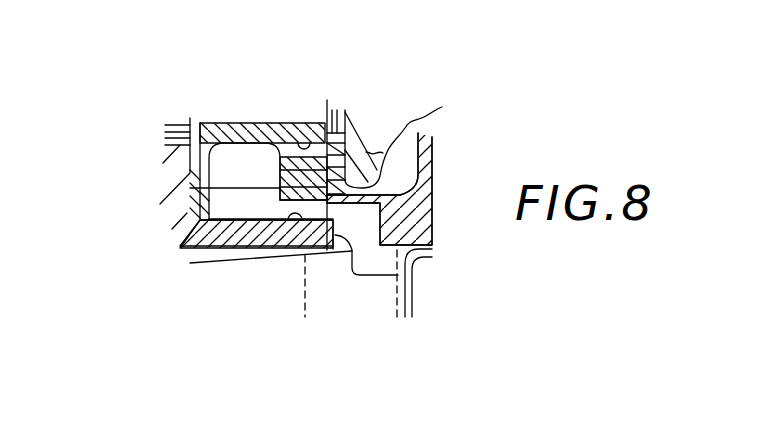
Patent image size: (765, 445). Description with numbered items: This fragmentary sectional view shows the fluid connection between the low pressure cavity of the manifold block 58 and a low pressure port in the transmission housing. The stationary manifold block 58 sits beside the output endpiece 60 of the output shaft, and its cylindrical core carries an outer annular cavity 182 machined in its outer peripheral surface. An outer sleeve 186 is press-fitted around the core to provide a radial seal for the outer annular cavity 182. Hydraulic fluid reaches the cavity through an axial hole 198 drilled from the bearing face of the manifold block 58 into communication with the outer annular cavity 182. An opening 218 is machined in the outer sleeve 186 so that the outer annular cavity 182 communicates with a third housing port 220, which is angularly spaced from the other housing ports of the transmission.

The manifold block 58 is at (204, 120).
The output endpiece 60 is at (404, 167).
The outer annular cavity 182 is at (258, 180).
The outer sleeve 186 is at (202, 221).
The axial hole 198 is at (310, 123).
The opening 218 is at (291, 221).
The third housing port 220 is at (398, 275).